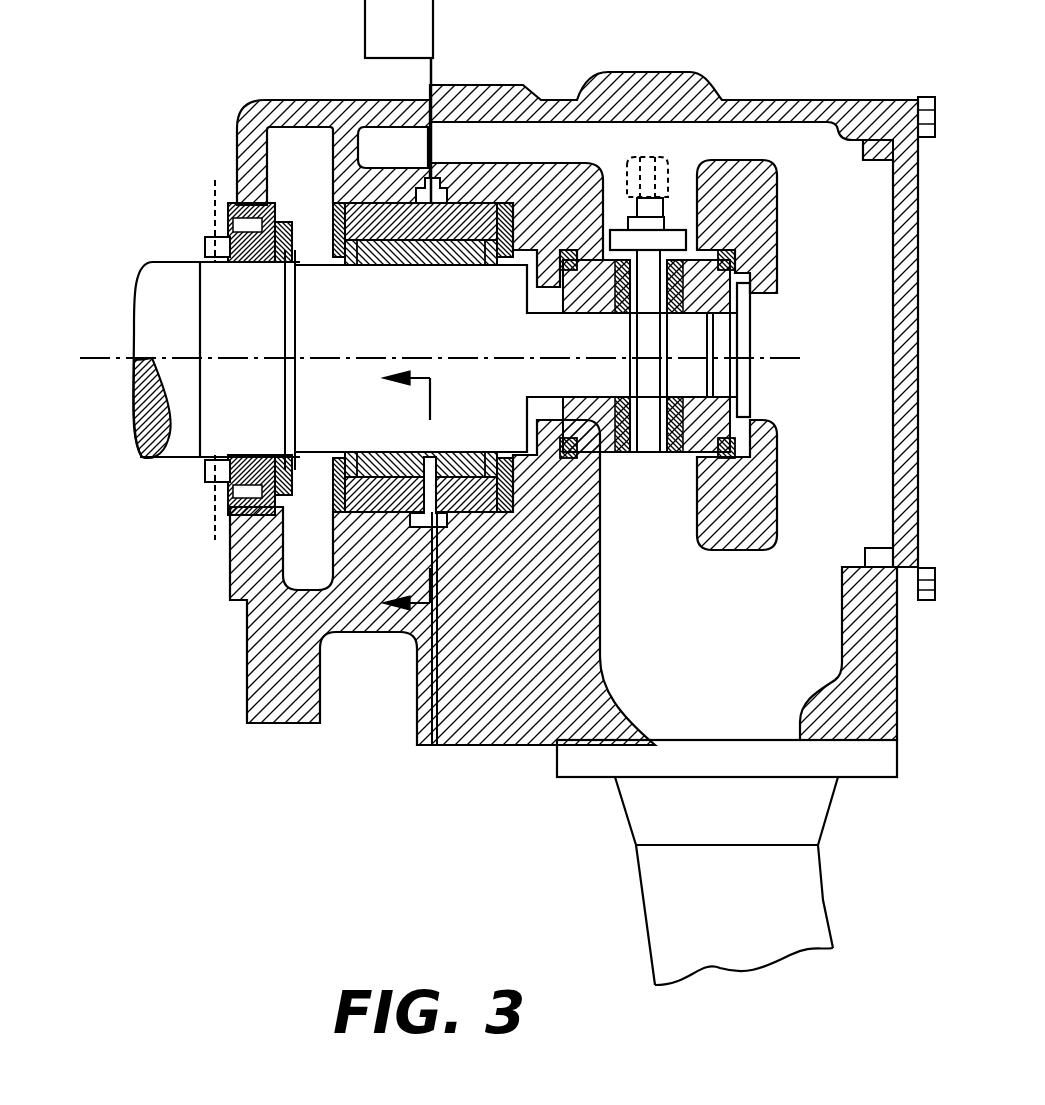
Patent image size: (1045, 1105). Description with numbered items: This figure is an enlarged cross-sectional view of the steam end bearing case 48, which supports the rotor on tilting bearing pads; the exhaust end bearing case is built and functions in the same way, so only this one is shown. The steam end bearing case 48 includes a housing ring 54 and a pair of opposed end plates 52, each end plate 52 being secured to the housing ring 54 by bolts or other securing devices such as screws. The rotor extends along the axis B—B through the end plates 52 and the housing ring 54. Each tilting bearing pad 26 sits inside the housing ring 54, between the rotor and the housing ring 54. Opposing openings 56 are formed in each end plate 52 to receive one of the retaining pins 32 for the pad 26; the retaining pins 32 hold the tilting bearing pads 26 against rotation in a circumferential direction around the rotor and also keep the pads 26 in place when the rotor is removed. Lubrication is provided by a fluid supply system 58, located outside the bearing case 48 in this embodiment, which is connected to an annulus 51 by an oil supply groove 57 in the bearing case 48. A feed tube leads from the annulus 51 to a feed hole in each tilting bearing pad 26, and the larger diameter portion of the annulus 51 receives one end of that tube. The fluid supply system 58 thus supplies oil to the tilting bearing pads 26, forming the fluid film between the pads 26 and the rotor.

The steam end bearing case 48 is at (185, 90).
The tilting bearing pad 26 is at (410, 252).
The retaining pin 32 is at (358, 265).
The opposing opening 56 is at (330, 262).
The end plate 52 is at (333, 228).
The housing ring 54 is at (473, 200).
The annulus 51 is at (422, 195).
The oil supply groove 57 is at (432, 75).
The fluid supply system 58 is at (382, 38).